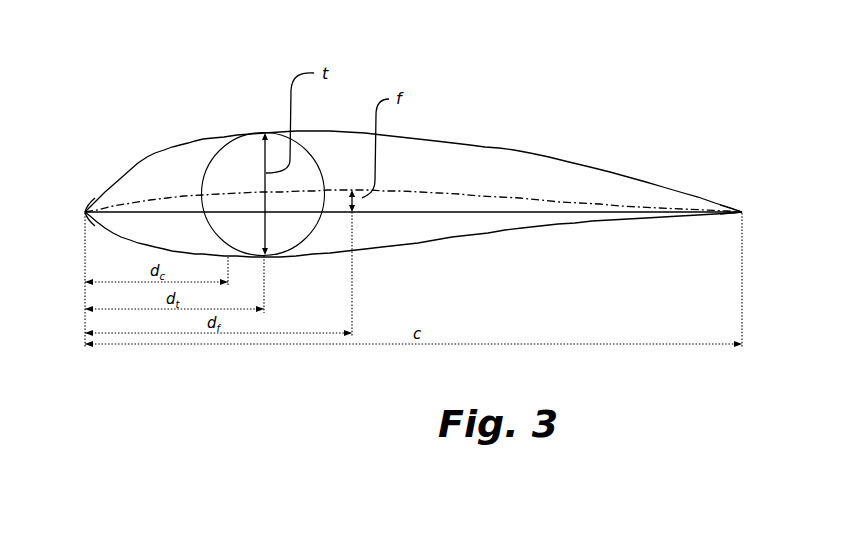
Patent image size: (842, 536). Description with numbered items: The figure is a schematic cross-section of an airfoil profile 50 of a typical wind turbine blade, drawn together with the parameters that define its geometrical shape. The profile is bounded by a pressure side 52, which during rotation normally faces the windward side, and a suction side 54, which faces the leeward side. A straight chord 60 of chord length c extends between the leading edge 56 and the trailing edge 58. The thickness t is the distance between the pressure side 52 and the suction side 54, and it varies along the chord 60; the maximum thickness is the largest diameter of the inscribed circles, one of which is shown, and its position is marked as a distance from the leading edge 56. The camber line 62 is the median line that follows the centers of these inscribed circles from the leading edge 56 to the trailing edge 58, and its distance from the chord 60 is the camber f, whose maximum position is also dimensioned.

The airfoil profile 50 is at (399, 151).
The pressure side 52 is at (545, 230).
The suction side 54 is at (494, 143).
The leading edge 56 is at (85, 212).
The trailing edge 58 is at (741, 210).
The chord 60 is at (578, 210).
The camber line 62 is at (402, 190).